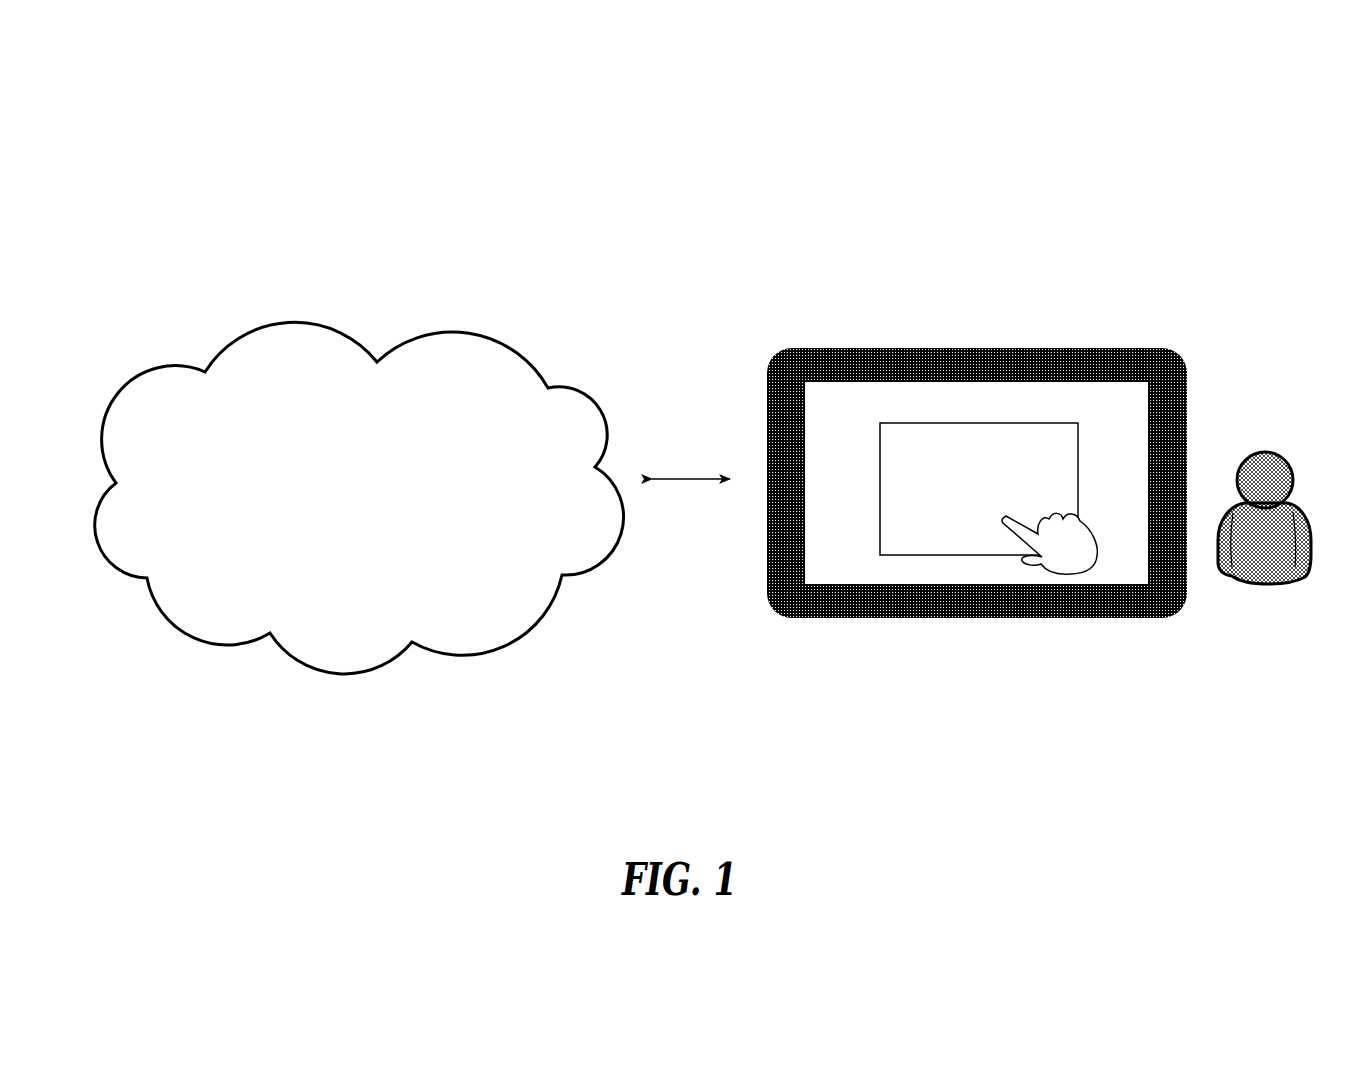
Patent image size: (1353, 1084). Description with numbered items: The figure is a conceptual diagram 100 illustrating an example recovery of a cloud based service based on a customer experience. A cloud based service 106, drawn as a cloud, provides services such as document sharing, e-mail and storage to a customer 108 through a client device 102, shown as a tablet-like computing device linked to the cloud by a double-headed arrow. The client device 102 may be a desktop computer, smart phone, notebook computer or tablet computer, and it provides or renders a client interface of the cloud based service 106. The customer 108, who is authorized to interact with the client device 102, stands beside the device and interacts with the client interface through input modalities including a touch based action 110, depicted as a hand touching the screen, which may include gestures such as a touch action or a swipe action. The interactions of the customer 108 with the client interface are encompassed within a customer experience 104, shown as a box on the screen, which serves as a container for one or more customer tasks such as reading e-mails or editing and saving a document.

The diagram 100 is at (1210, 93).
The client device 102 is at (973, 339).
The customer experience 104 is at (976, 421).
The cloud based service 106 is at (353, 316).
The customer 108 is at (1277, 436).
The touch based action 110 is at (1060, 528).